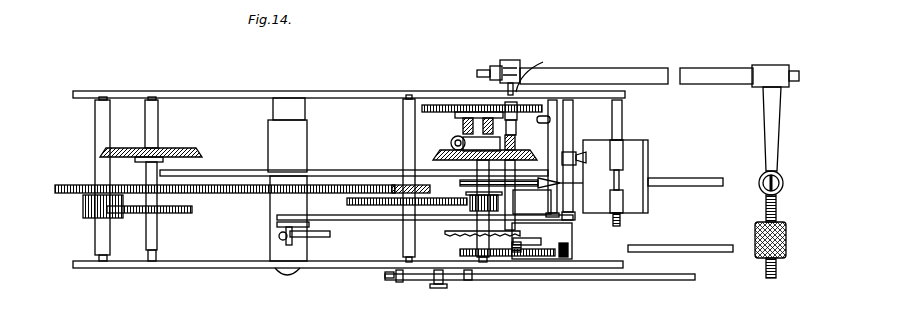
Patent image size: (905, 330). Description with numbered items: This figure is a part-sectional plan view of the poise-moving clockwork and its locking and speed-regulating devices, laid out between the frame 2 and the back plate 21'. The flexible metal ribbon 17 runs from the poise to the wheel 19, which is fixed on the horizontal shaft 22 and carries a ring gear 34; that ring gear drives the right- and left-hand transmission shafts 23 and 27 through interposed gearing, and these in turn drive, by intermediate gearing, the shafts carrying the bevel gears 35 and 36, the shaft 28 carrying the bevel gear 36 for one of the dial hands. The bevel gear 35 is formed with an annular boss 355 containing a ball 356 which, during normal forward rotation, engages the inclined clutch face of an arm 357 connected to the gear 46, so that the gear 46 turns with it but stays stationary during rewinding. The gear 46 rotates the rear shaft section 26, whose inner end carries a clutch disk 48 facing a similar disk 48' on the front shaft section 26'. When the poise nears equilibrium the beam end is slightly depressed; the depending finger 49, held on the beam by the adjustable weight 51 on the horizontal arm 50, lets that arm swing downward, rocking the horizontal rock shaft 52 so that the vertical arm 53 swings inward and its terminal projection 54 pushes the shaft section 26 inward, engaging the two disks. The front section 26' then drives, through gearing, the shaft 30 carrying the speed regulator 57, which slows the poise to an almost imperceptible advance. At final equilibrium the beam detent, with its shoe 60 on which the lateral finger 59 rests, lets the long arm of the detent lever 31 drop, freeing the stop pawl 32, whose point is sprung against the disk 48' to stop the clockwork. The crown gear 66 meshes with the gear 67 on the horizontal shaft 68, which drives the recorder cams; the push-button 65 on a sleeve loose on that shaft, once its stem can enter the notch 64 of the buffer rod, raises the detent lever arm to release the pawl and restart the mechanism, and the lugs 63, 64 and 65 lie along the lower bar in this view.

The frame 2 is at (186, 268).
The flexible metal ribbon 17 is at (700, 186).
The wheel 19 is at (246, 172).
The back plate 21' is at (349, 84).
The horizontal shaft 22 is at (282, 257).
The right-hand transmission shaft 23 is at (407, 93).
The rear shaft section 26 is at (538, 70).
The front shaft section 26' is at (540, 286).
The left-hand transmission shaft 27 is at (95, 129).
The shaft 28 is at (148, 129).
The shaft 30 is at (622, 116).
The detent lever 31 is at (571, 116).
The stop pawl 32 is at (553, 134).
The ring gear 34 is at (323, 186).
The bevel gear 35 is at (437, 152).
The bevel gear 36 is at (198, 154).
The gear 46 is at (442, 105).
The clutch disk 48 is at (521, 174).
The clutch disk 48' is at (508, 202).
The depending finger 49 is at (765, 175).
The horizontal arm 50 is at (770, 117).
The adjustable weight 51 is at (756, 232).
The horizontal rock shaft 52 is at (645, 70).
The vertical arm 53 is at (512, 61).
The terminal projection 54 is at (505, 63).
The speed regulator 57 is at (640, 153).
The lateral finger 59 is at (279, 237).
The shoe 60 is at (313, 244).
The lug 63 is at (392, 283).
The notch 64 is at (436, 290).
The push-button 65 is at (445, 289).
The crown gear 66 is at (449, 236).
The gear 67 is at (512, 258).
The horizontal shaft 68 is at (545, 245).
The annular boss 355 is at (456, 114).
The ball 356 is at (455, 141).
The arm 357 is at (470, 159).